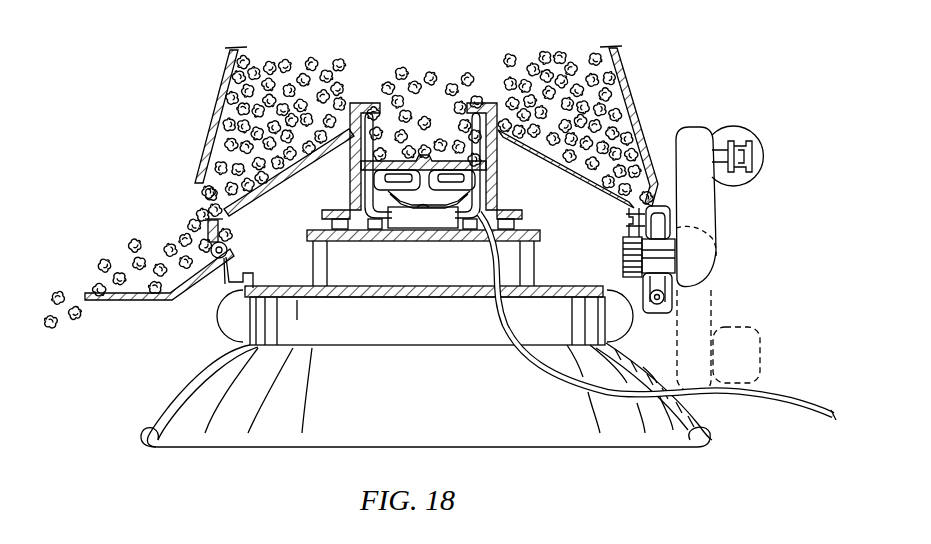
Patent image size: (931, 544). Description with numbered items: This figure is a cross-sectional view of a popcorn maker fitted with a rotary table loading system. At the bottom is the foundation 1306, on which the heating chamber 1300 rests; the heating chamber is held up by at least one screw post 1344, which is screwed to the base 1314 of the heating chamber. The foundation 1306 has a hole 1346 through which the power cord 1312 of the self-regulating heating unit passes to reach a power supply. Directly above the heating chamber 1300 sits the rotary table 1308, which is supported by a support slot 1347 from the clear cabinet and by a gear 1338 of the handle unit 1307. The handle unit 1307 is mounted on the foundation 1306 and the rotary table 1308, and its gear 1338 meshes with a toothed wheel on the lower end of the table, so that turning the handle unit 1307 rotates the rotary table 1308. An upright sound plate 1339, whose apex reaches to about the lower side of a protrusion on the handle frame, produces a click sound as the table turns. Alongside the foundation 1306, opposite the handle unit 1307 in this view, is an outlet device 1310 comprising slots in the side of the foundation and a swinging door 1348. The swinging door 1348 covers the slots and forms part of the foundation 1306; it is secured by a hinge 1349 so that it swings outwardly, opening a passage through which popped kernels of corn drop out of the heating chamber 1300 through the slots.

The heating chamber 1300 is at (484, 100).
The foundation 1306 is at (542, 430).
The handle unit 1307 is at (716, 220).
The rotary table 1308 is at (283, 188).
The outlet device 1310 is at (116, 303).
The power cord 1312 is at (793, 397).
The base of the heating chamber 1314 is at (434, 243).
The gear 1338 is at (623, 252).
The sound plate 1339 is at (672, 303).
The screw post 1344 is at (352, 243).
The hole 1346 is at (487, 303).
The support slot 1347 is at (206, 228).
The swinging door 1348 is at (190, 298).
The hinge 1349 is at (231, 247).